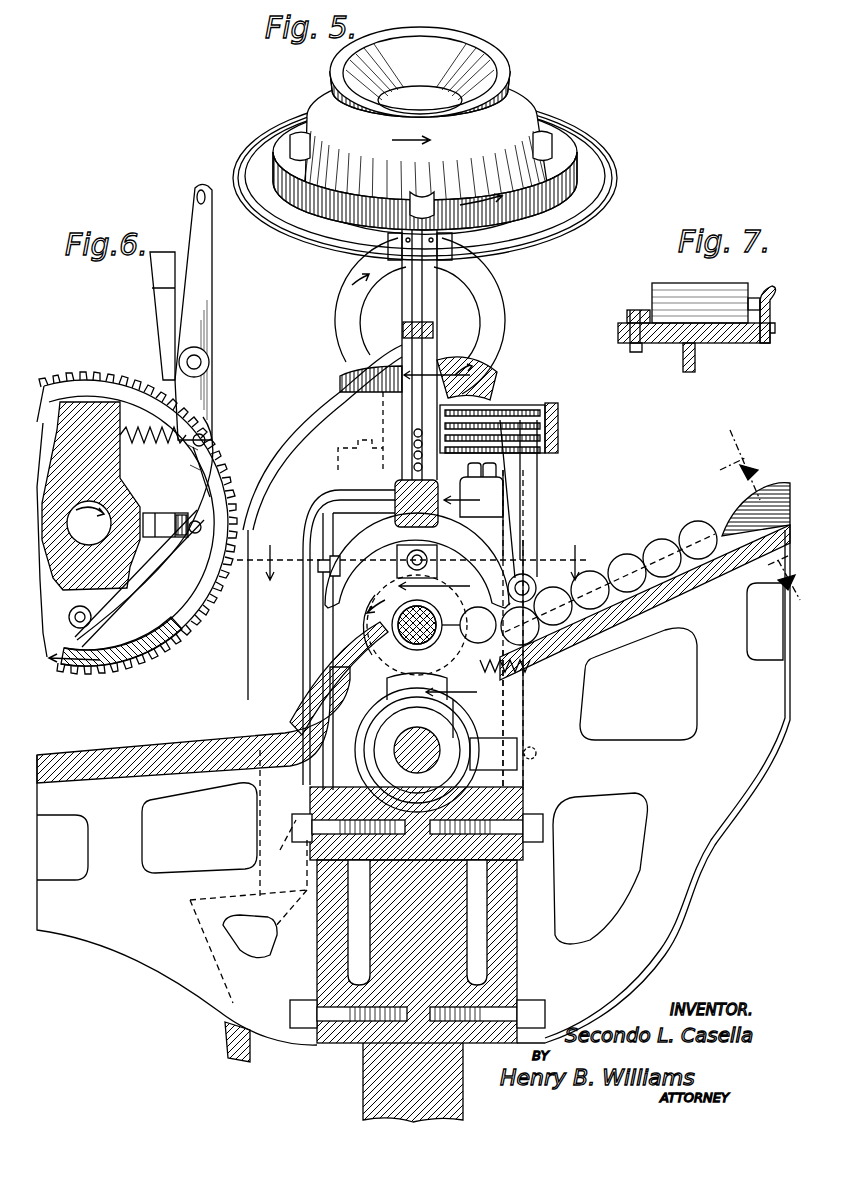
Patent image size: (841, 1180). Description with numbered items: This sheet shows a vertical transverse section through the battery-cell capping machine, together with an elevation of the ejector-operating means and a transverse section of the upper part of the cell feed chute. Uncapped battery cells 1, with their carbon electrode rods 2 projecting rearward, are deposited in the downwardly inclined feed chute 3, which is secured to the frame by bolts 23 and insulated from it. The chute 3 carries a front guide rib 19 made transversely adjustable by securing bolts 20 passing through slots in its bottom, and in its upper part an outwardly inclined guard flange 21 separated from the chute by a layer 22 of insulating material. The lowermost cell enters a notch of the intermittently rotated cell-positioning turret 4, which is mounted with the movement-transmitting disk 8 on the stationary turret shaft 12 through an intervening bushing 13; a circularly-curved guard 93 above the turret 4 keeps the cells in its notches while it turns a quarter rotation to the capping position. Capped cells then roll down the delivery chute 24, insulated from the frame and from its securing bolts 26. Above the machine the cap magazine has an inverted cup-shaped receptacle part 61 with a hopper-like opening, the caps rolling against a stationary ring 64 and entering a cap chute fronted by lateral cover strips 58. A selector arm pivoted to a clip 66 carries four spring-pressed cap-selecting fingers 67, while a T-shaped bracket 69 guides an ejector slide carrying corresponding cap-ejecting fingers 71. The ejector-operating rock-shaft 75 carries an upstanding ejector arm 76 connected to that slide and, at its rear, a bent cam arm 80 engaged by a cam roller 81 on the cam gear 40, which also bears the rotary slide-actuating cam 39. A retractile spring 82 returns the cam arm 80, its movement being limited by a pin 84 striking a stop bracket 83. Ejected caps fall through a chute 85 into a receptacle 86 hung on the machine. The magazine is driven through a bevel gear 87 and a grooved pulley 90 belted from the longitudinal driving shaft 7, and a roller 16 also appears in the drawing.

In FIG. 5, the uncapped battery cells 1 is at (625, 545).
In FIG. 7, the uncapped battery cells 1 is at (660, 285).
In FIG. 7, the carbon electrode rods 2 is at (752, 298).
In FIG. 5, the feed chute 3 is at (730, 570).
In FIG. 7, the feed chute 3 is at (722, 360).
In FIG. 5, the cell-positioning turret 4 is at (268, 560).
In FIG. 5, the longitudinal driving shaft 7 is at (412, 740).
In FIG. 5, the movement-transmitting disk 8 is at (434, 484).
In FIG. 5, the stationary turret shaft 12 is at (395, 640).
In FIG. 5, the bushing 13 is at (438, 660).
In FIG. 5, the roller 16 is at (469, 625).
In FIG. 7, the front guide rib 19 is at (632, 310).
In FIG. 7, the securing bolts 20 is at (638, 352).
In FIG. 5, the guard flange 21 is at (728, 515).
In FIG. 7, the guard flange 21 is at (780, 300).
In FIG. 7, the insulating layer 22 is at (765, 345).
In FIG. 5, the bolts 23 is at (560, 978).
In FIG. 5, the delivery chute 24 is at (180, 742).
In FIG. 5, the securing bolts 26 is at (280, 960).
In FIG. 6, the rotary slide-actuating cam 39 is at (232, 622).
In FIG. 6, the cam gear 40 is at (188, 640).
In FIG. 5, the lateral cover strips 58 is at (430, 298).
In FIG. 5, the inverted cup-shaped receptacle part 61 is at (420, 72).
In FIG. 5, the stationary ring 64 is at (618, 178).
In FIG. 5, the clip 66 is at (433, 330).
In FIG. 5, the cap-selecting fingers 67 is at (413, 457).
In FIG. 5, the T-shaped bracket 69 is at (555, 405).
In FIG. 5, the cap-ejecting fingers 71 is at (500, 430).
In FIG. 5, the ejector-operating rock-shaft 75 is at (524, 585).
In FIG. 6, the ejector-operating rock-shaft 75 is at (205, 360).
In FIG. 5, the ejector arm 76 is at (525, 492).
In FIG. 6, the ejector arm 76 is at (210, 267).
In FIG. 5, the cam arm 80 is at (520, 755).
In FIG. 6, the cam arm 80 is at (210, 412).
In FIG. 6, the cam roller 81 is at (70, 615).
In FIG. 6, the retractile spring 82 is at (150, 445).
In FIG. 5, the stop bracket 83 is at (500, 740).
In FIG. 6, the stop bracket 83 is at (170, 512).
In FIG. 6, the pin 84 is at (185, 535).
In FIG. 5, the chute 85 is at (232, 692).
In FIG. 5, the receptacle 86 is at (226, 1045).
In FIG. 5, the bevel gear 87 is at (495, 385).
In FIG. 5, the grooved pulley 90 is at (338, 300).
In FIG. 5, the circularly-curved guard 93 is at (372, 552).